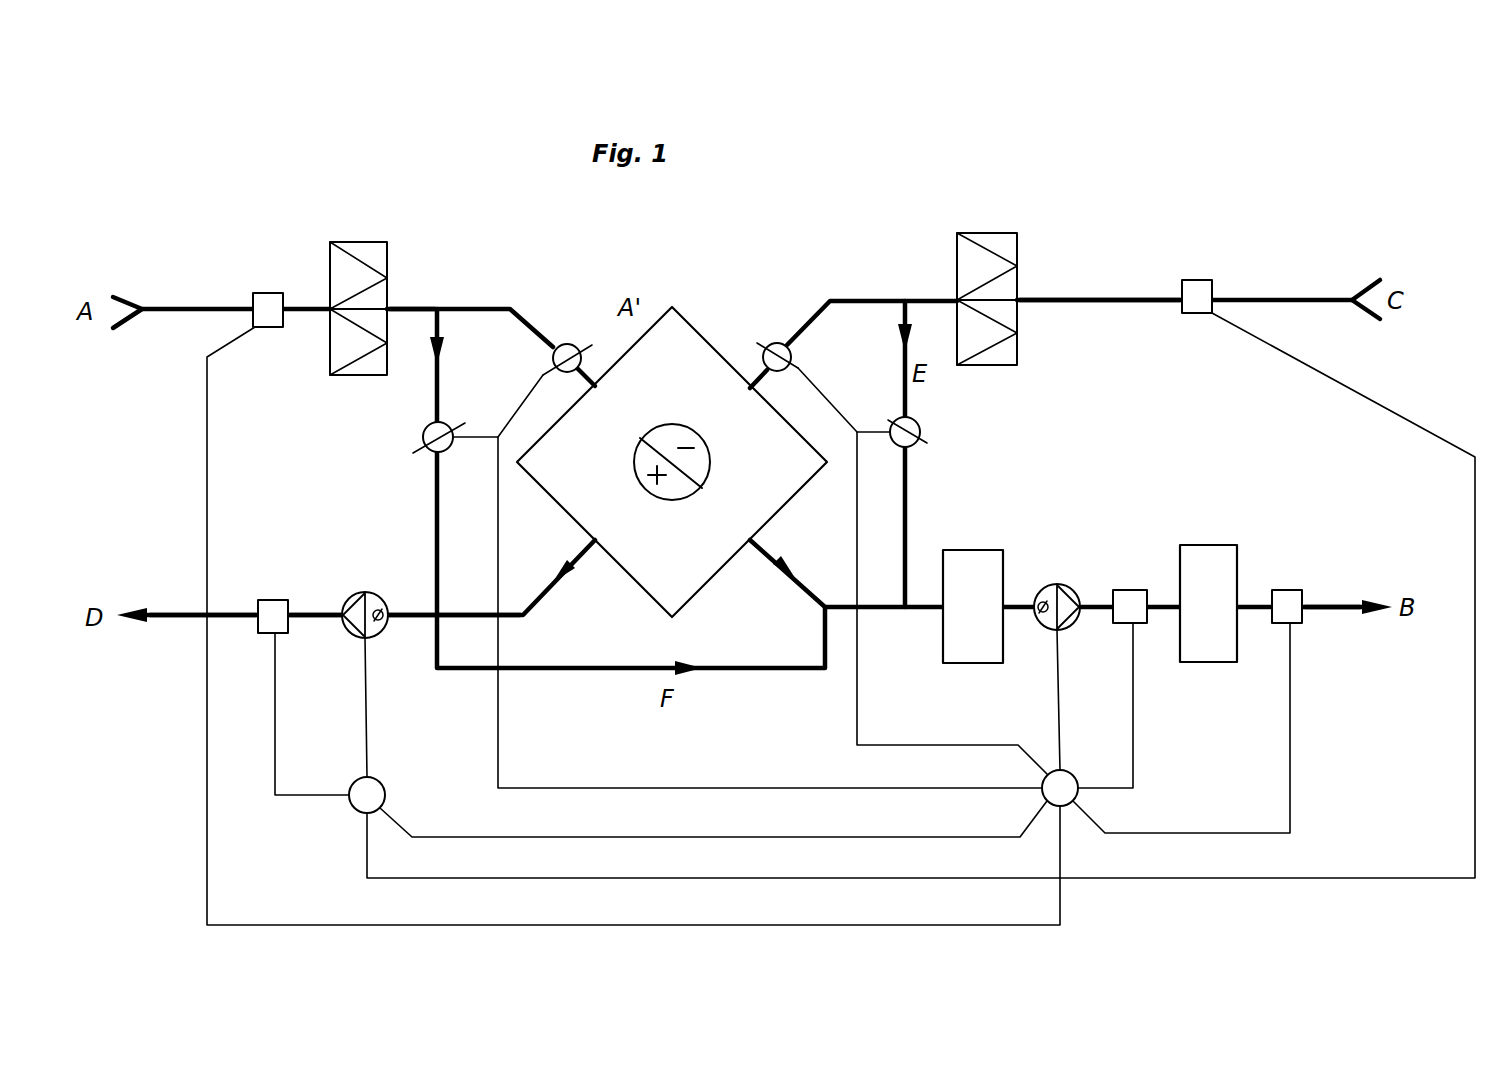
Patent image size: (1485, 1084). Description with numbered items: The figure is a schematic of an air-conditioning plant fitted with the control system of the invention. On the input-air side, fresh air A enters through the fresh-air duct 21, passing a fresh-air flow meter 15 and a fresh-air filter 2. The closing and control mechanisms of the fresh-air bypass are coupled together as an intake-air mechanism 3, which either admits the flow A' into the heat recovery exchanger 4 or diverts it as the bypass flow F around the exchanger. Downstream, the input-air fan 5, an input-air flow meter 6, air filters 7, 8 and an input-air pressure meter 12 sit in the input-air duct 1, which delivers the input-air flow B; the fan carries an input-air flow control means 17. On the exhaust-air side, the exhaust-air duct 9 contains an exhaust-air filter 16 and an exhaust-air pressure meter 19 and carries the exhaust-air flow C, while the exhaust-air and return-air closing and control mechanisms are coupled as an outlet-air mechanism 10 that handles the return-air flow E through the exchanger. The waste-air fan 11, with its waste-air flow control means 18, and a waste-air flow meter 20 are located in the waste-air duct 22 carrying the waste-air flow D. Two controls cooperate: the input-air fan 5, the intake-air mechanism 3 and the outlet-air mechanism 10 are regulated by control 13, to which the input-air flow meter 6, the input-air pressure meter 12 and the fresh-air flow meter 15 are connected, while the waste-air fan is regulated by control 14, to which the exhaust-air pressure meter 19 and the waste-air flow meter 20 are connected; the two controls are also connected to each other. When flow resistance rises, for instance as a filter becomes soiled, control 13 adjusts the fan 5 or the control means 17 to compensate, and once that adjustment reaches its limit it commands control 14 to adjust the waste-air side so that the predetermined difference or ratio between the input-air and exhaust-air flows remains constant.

The input-air duct 1 is at (1332, 609).
The fresh-air filter 2 is at (357, 242).
The intake-air mechanism 3 is at (552, 359).
The heat recovery exchanger 4 is at (690, 325).
The input-air fan 5 is at (1065, 584).
The input-air flow meter 6 is at (1130, 590).
The air filter 7 is at (960, 550).
The air filter 8 is at (1210, 545).
The exhaust-air duct 9 is at (1075, 300).
The outlet-air mechanism 10 is at (903, 418).
The waste-air fan 11 is at (350, 594).
The input-air pressure meter 12 is at (1283, 590).
The control 13 is at (1070, 771).
The control 14 is at (382, 781).
The fresh-air flow meter 15 is at (263, 293).
The exhaust-air filter 16 is at (982, 233).
The input-air flow control means 17 is at (1045, 613).
The waste-air flow control means 18 is at (387, 619).
The exhaust-air pressure meter 19 is at (1198, 280).
The waste-air flow meter 20 is at (280, 633).
The fresh-air duct 21 is at (400, 305).
The waste-air duct 22 is at (222, 612).